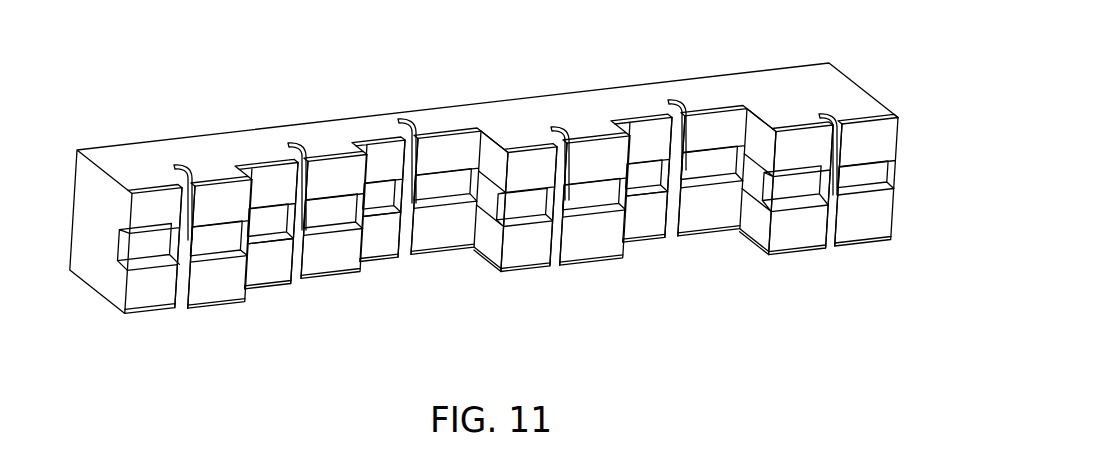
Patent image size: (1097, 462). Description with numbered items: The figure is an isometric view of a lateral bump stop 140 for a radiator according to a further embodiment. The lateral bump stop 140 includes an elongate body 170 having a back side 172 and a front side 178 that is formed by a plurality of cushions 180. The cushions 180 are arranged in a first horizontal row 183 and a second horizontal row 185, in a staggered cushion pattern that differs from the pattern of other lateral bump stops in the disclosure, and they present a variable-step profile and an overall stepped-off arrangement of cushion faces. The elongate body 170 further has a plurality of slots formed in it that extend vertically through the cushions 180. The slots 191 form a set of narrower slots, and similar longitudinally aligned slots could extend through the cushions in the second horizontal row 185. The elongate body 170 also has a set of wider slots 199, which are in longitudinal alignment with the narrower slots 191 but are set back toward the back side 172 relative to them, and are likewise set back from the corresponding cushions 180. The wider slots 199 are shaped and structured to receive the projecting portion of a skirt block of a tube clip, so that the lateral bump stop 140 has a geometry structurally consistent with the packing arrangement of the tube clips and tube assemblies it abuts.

The lateral bump stop 140 is at (871, 80).
The elongate body 170 is at (884, 245).
The back side 172 is at (338, 106).
The front side 178 is at (140, 288).
The cushions 180 is at (157, 308).
The first horizontal row 183 is at (902, 214).
The second horizontal row 185 is at (902, 139).
The slots 191 is at (187, 305).
The wider slots 199 is at (187, 225).